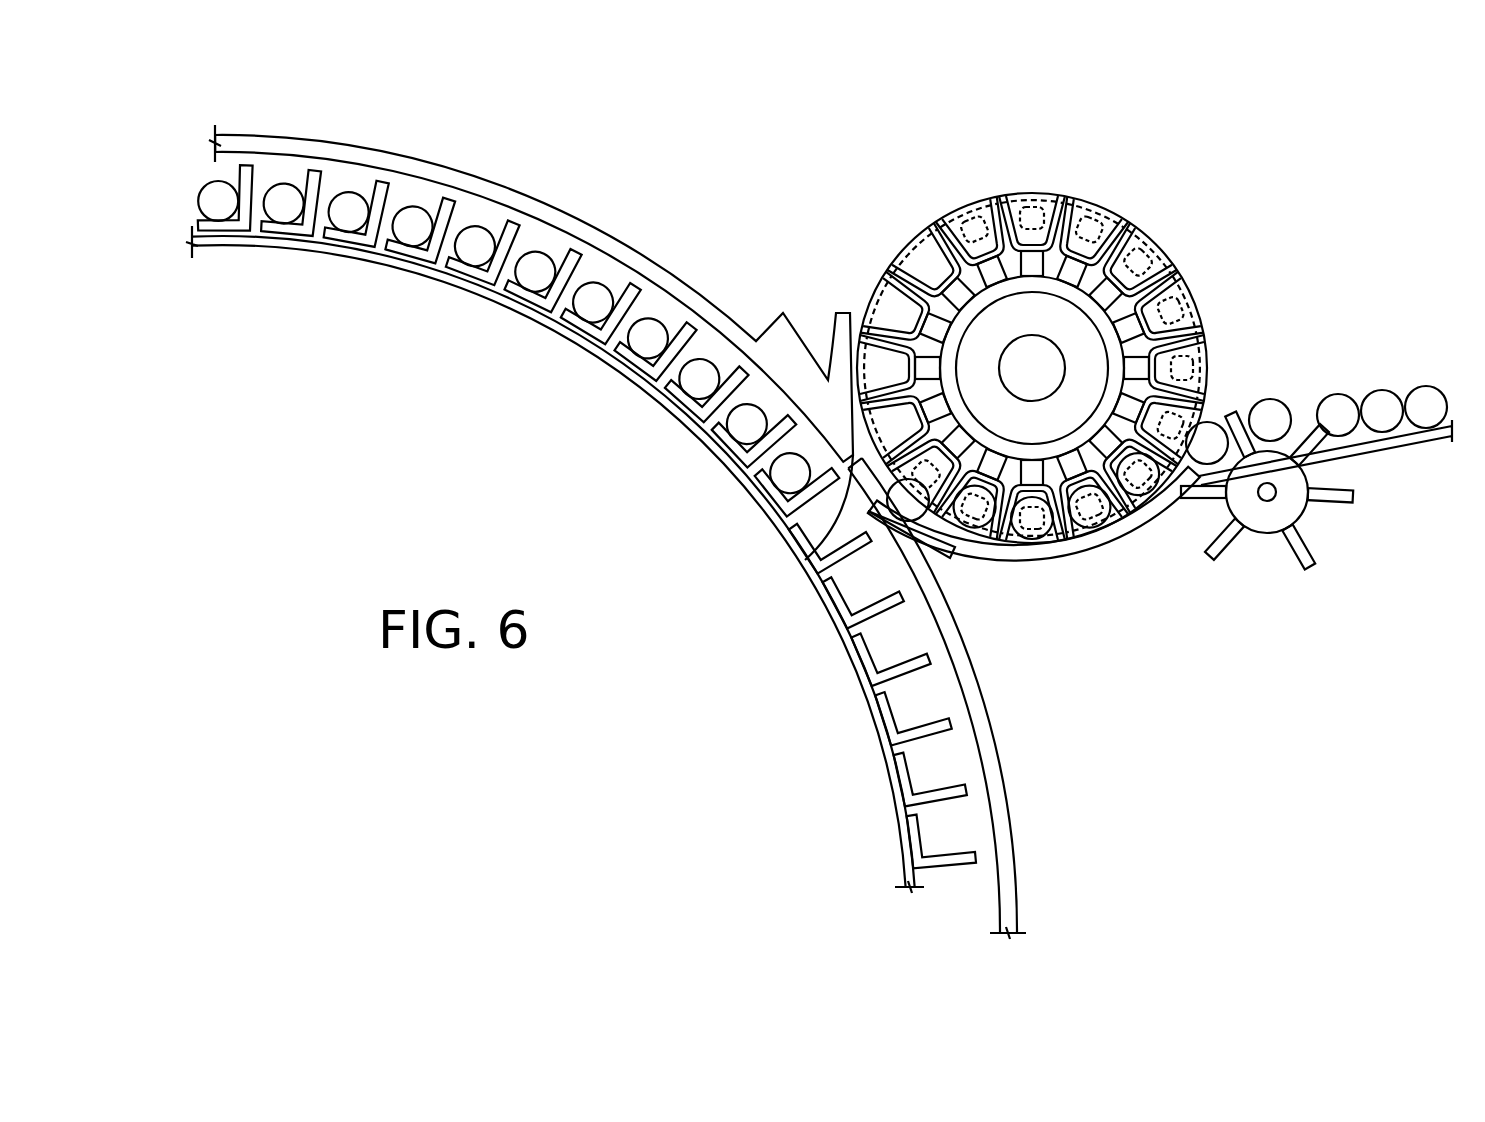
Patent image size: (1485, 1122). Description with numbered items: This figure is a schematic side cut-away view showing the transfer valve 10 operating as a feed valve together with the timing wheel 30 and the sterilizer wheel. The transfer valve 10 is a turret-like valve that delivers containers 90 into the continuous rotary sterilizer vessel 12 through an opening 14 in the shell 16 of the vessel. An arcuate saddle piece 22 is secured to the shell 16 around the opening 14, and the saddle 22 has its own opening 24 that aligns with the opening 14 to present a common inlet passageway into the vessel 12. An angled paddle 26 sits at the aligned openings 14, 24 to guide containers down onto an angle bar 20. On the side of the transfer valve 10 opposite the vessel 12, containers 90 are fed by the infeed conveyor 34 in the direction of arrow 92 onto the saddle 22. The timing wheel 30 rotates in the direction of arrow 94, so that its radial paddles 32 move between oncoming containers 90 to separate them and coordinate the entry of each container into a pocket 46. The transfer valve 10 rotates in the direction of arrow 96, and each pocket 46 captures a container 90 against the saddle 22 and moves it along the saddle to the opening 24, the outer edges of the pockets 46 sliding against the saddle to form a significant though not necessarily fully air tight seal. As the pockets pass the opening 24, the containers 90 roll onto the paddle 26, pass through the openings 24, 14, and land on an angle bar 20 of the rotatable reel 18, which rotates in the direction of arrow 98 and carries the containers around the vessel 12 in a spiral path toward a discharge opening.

The transfer valve 10 is at (1170, 188).
The continuous rotary sterilizer vessel 12 is at (562, 183).
The opening 14 is at (786, 527).
The shell 16 is at (1006, 784).
The rotatable reel 18 is at (868, 722).
The angle bars 20 is at (655, 372).
The arcuate saddle piece 22 is at (1058, 568).
The opening 24 is at (809, 553).
The angled paddle 26 is at (893, 523).
The timing wheel 30 is at (1263, 558).
The radial paddles 32 is at (1328, 505).
The infeed conveyor 34 is at (1384, 444).
The pocket 46 is at (1203, 415).
The containers 90 is at (475, 268).
The arrow 92 is at (1295, 378).
The arrow 94 is at (1175, 532).
The arrow 96 is at (1210, 255).
The arrow 98 is at (655, 520).